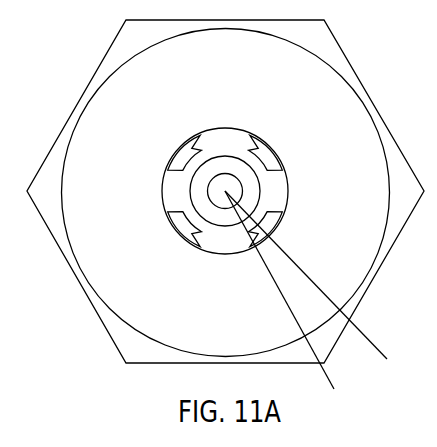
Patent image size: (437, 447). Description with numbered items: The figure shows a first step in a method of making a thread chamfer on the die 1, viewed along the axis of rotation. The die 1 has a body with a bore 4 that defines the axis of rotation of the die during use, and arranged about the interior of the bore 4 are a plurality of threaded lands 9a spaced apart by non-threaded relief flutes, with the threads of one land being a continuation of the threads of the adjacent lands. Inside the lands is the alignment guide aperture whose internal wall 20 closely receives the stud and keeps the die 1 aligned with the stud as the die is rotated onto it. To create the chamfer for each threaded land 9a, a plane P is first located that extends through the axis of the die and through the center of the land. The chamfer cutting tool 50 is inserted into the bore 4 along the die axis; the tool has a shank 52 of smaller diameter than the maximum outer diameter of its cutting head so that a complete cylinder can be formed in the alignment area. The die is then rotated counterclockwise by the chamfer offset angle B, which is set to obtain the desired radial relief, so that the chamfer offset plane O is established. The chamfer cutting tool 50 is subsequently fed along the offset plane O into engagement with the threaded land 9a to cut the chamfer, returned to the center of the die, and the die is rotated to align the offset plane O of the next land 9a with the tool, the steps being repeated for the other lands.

The die 1 is at (369, 90).
The internal wall 20 is at (161, 198).
The chamfer cutting tool 50 is at (272, 192).
The shank 52 is at (224, 180).
The bore 4 is at (184, 203).
The threaded lands 9a is at (266, 151).
The chamfer offset plane O is at (287, 303).
The plane P is at (315, 289).
The chamfer offset angle B is at (372, 355).